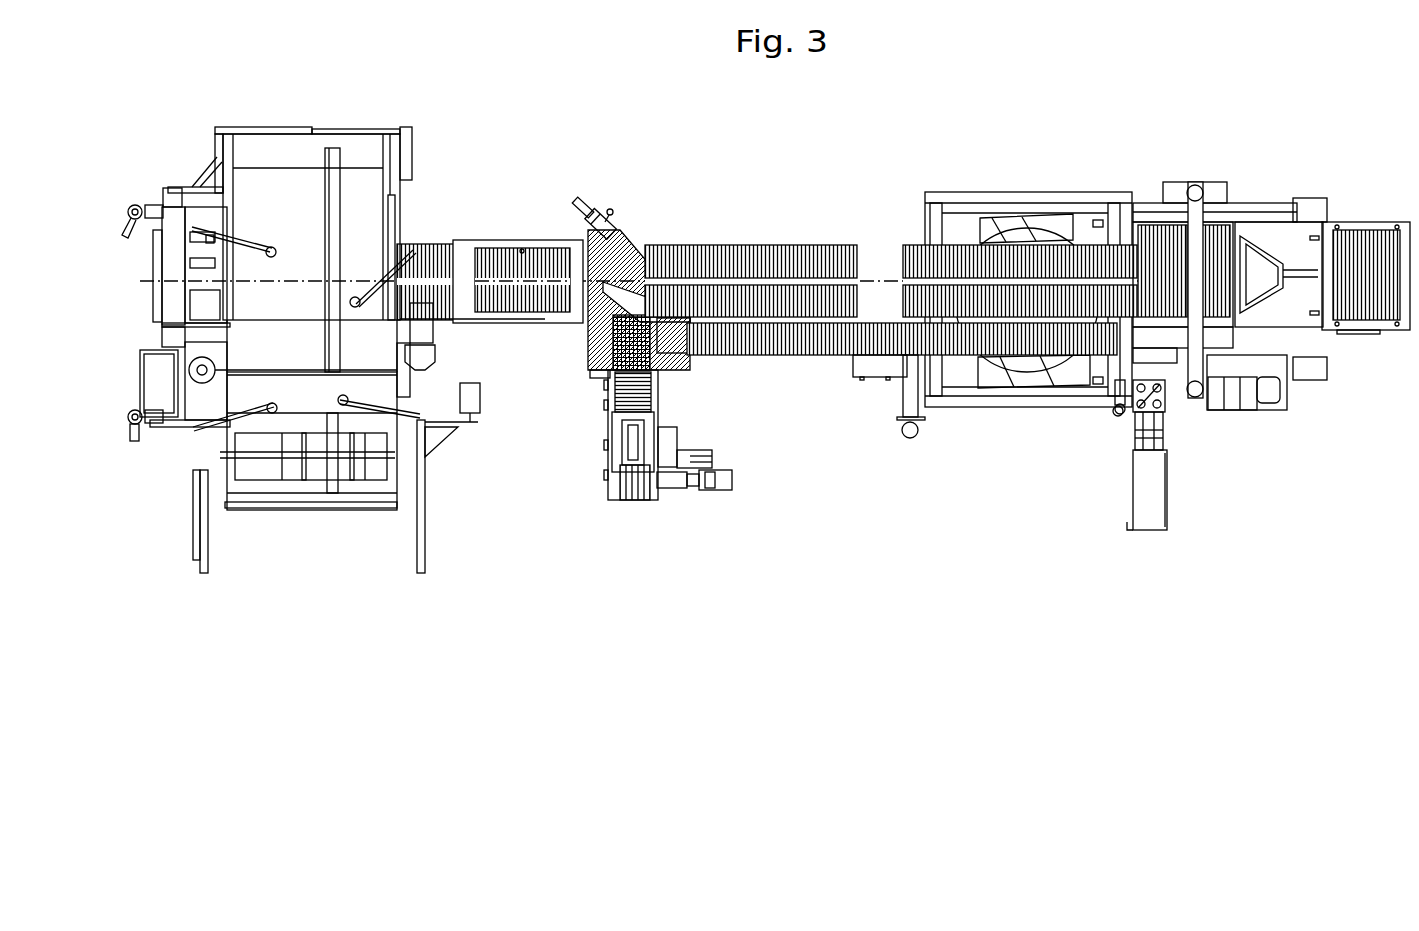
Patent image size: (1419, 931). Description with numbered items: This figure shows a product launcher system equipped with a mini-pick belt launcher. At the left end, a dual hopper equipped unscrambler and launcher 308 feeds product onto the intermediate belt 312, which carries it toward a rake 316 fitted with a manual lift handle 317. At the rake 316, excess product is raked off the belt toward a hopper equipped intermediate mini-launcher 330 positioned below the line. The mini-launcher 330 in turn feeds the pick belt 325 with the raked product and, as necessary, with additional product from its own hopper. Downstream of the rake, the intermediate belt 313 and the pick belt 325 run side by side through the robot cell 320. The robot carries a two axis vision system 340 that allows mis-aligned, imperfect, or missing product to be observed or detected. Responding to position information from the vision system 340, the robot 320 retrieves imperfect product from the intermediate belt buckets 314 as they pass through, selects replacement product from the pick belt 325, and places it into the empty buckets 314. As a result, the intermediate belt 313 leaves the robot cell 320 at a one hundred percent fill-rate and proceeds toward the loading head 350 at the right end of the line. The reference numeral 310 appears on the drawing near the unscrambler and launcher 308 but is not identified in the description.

The dual hopper equipped unscrambler and launcher 308 is at (301, 123).
The processing station 310 is at (428, 187).
The intermediate belt 312 is at (448, 300).
The intermediate belt 313 is at (891, 254).
The intermediate belt buckets 314 is at (753, 243).
The rake 316 is at (640, 240).
The manual lift handle 317 is at (605, 205).
The robot cell 320 is at (1022, 187).
The pick belt 325 is at (785, 343).
The intermediate mini-launcher 330 is at (668, 413).
The two axis vision system 340 is at (850, 383).
The loading head 350 is at (1365, 213).